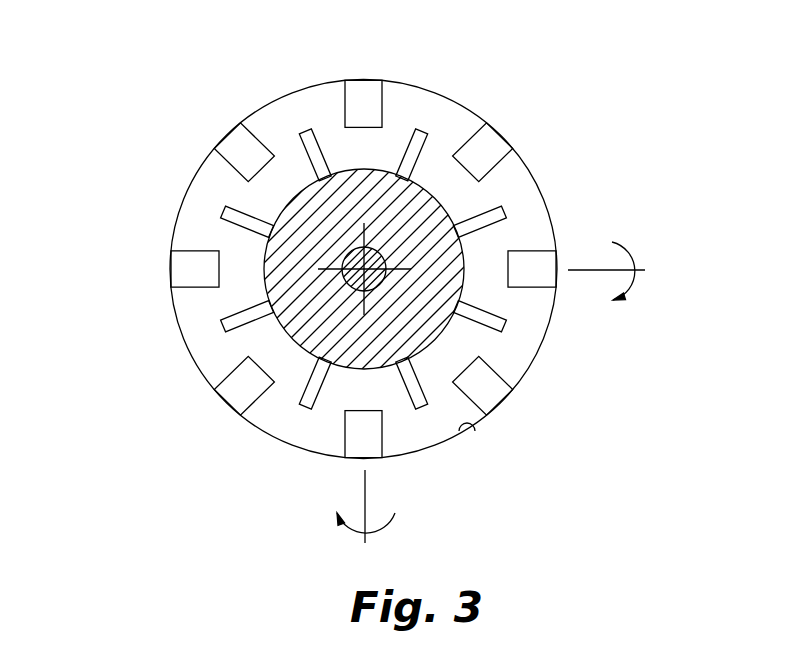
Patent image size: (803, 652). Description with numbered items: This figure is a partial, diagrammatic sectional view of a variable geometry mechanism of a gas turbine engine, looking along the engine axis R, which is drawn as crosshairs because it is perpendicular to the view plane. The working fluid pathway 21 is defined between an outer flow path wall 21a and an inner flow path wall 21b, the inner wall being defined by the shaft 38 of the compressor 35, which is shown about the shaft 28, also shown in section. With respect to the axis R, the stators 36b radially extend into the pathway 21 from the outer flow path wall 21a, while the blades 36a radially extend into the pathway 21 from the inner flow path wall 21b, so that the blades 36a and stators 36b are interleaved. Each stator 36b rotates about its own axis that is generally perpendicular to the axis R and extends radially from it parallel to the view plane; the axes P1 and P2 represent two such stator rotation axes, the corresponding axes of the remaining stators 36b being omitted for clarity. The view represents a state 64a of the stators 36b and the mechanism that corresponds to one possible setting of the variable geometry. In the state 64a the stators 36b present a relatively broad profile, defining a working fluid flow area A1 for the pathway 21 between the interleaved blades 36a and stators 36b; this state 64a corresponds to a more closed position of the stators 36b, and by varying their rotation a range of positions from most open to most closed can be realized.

The working fluid pathway 21 is at (188, 312).
The outer flow path wall 21a is at (472, 427).
The inner flow path wall 21b is at (440, 328).
The shaft 28 is at (320, 308).
The compressor 35 is at (248, 247).
The blades 36a is at (308, 127).
The stators 36b is at (365, 79).
The shaft 38 is at (462, 292).
The state 64a is at (510, 133).
The working fluid flow area A1 is at (366, 282).
The stator rotation axis P1 is at (605, 270).
The stator rotation axis P2 is at (367, 502).
The axis R is at (377, 248).